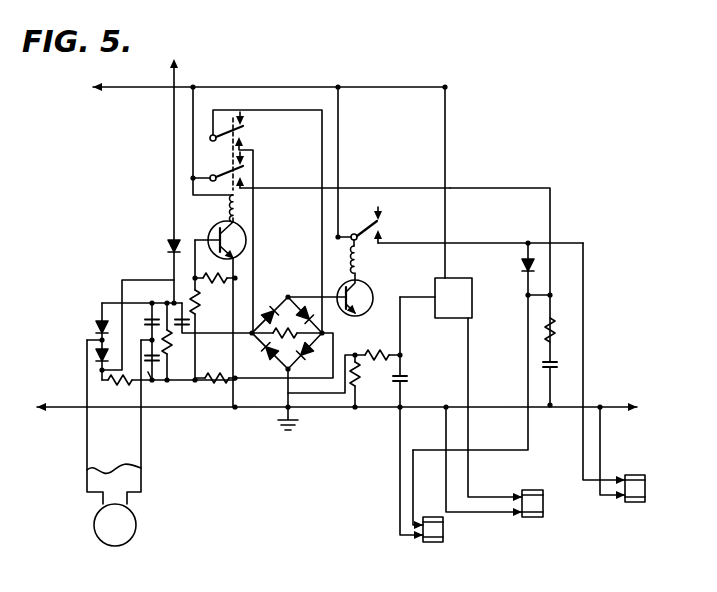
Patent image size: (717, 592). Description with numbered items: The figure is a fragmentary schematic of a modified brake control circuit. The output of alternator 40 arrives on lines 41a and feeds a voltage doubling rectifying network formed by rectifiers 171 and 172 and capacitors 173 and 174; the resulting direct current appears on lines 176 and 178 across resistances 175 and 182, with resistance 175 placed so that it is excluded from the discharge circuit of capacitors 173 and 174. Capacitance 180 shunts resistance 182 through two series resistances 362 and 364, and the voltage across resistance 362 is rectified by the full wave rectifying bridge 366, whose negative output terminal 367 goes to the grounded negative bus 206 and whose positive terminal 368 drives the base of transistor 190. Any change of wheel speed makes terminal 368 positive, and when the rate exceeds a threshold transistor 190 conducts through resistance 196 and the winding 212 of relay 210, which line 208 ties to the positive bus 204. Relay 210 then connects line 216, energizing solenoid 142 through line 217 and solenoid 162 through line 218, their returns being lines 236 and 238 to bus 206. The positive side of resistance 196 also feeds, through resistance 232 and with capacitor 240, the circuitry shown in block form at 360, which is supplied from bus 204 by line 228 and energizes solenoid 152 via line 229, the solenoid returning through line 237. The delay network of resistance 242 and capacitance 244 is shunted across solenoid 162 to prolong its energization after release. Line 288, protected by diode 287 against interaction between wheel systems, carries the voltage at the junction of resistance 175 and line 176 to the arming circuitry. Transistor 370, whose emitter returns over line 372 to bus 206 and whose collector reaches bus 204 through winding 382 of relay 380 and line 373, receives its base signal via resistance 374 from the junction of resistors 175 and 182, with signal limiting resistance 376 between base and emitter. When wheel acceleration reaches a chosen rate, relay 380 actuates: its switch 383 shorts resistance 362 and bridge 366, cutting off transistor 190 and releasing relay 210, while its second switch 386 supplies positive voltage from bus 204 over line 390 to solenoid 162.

The alternator 40 is at (138, 527).
The lines 41a is at (112, 464).
The actuating solenoid 142 is at (640, 468).
The control solenoid 152 is at (543, 510).
The control solenoid 162 is at (443, 532).
The rectifier 171 is at (97, 329).
The rectifier 172 is at (100, 355).
The capacitor 173 is at (150, 316).
The capacitor 174 is at (151, 352).
The resistor 175 is at (127, 383).
The line 176 is at (152, 381).
The line 178 is at (151, 332).
The capacitor 180 is at (168, 341).
The resistor 182 is at (182, 342).
The transistor 190 is at (372, 302).
The resistance 196 is at (360, 383).
The positive bus 204 is at (290, 86).
The negative bus 206 is at (75, 410).
The line 208 is at (343, 215).
The relay 210 is at (368, 259).
The relay winding 212 is at (353, 260).
The line 216 is at (503, 245).
The line 217 is at (583, 462).
The line 218 is at (529, 436).
The line 228 is at (414, 186).
The line 229 is at (478, 427).
The resistance 232 is at (371, 353).
The line 236 is at (611, 434).
The line 237 is at (446, 417).
The line 238 is at (405, 449).
The capacitor 240 is at (406, 378).
The resistance 242 is at (555, 330).
The capacitance 244 is at (557, 366).
The junction diode 287 is at (170, 252).
The line 288 is at (179, 71).
The control solenoid energizing circuitry 360 is at (490, 272).
The resistance 362 is at (271, 362).
The resistance 364 is at (224, 382).
The full wave rectifying bridge 366 is at (278, 288).
The negative output terminal 367 is at (292, 369).
The positive terminal 368 is at (287, 296).
The transistor 370 is at (217, 231).
The line 372 is at (235, 374).
The line 373 is at (193, 104).
The resistance 374 is at (198, 316).
The signal limiting resistance 376 is at (214, 290).
The relay 380 is at (261, 181).
The relay coil 382 is at (238, 208).
The relay switch 383 is at (246, 128).
The relay switch 386 is at (230, 171).
The line 390 is at (484, 186).